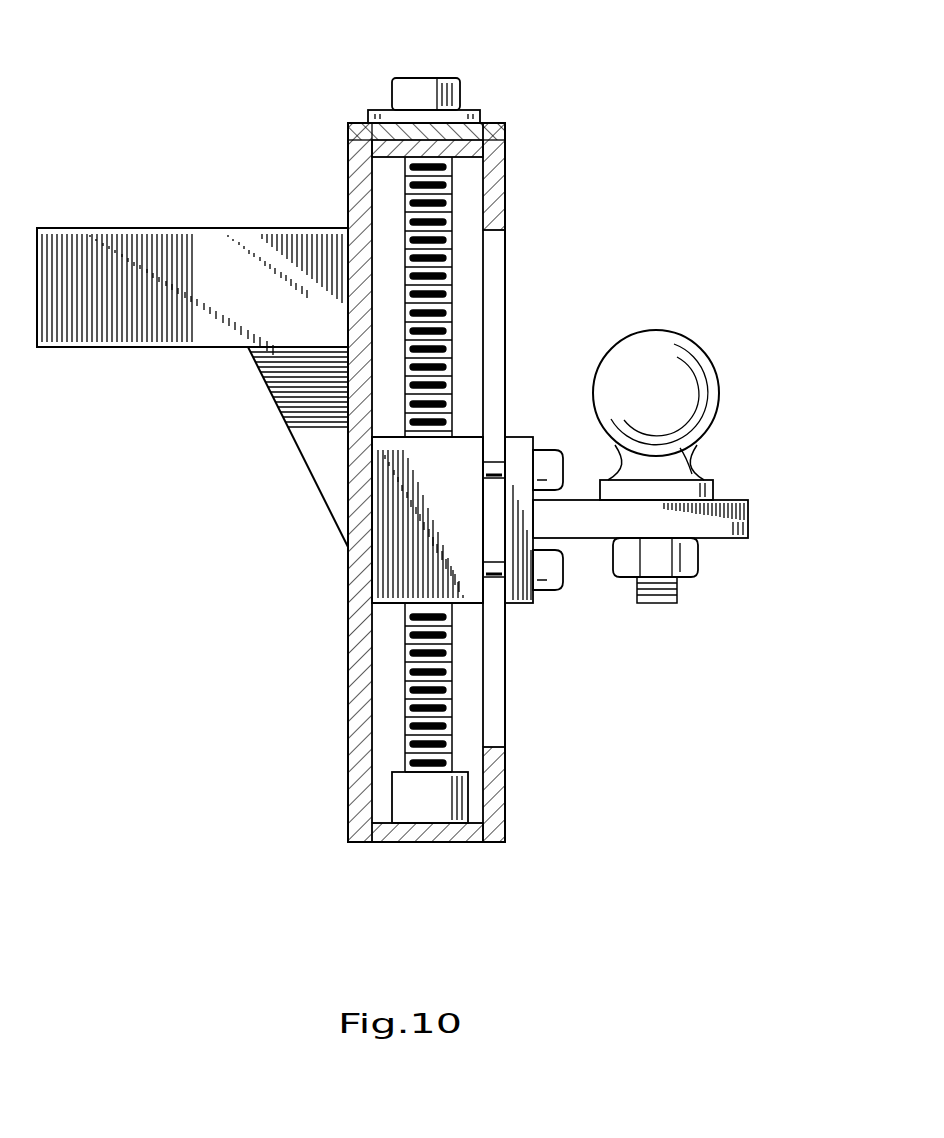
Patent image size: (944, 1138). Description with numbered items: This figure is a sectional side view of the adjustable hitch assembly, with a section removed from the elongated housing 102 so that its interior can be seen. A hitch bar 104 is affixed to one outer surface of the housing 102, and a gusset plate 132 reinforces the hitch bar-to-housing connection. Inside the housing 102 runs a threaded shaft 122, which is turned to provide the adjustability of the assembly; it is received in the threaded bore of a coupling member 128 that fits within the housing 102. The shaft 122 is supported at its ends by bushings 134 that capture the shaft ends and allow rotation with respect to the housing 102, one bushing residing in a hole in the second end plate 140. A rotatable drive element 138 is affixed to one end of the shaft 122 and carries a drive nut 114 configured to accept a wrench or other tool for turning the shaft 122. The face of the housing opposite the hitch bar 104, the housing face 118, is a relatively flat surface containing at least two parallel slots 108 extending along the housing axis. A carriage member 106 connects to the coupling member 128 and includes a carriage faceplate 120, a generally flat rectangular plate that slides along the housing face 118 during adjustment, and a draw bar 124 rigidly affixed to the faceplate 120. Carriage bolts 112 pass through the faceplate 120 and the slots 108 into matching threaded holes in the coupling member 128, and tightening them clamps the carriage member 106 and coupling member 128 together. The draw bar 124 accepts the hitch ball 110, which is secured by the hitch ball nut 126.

The elongated housing 102 is at (318, 688).
The hitch bar 104 is at (212, 247).
The carriage member 106 is at (782, 463).
The slots 108 is at (497, 287).
The hitch ball 110 is at (675, 375).
The carriage bolts 112 is at (545, 450).
The drive nut 114 is at (443, 78).
The housing face 118 is at (505, 762).
The carriage faceplate 120 is at (522, 603).
The threaded shaft 122 is at (450, 210).
The draw bar 124 is at (723, 522).
The hitch ball nut 126 is at (690, 555).
The coupling member 128 is at (408, 513).
The gusset plate 132 is at (302, 412).
The bushings 134 is at (420, 803).
The rotatable drive element 138 is at (478, 110).
The second end plate 140 is at (458, 838).